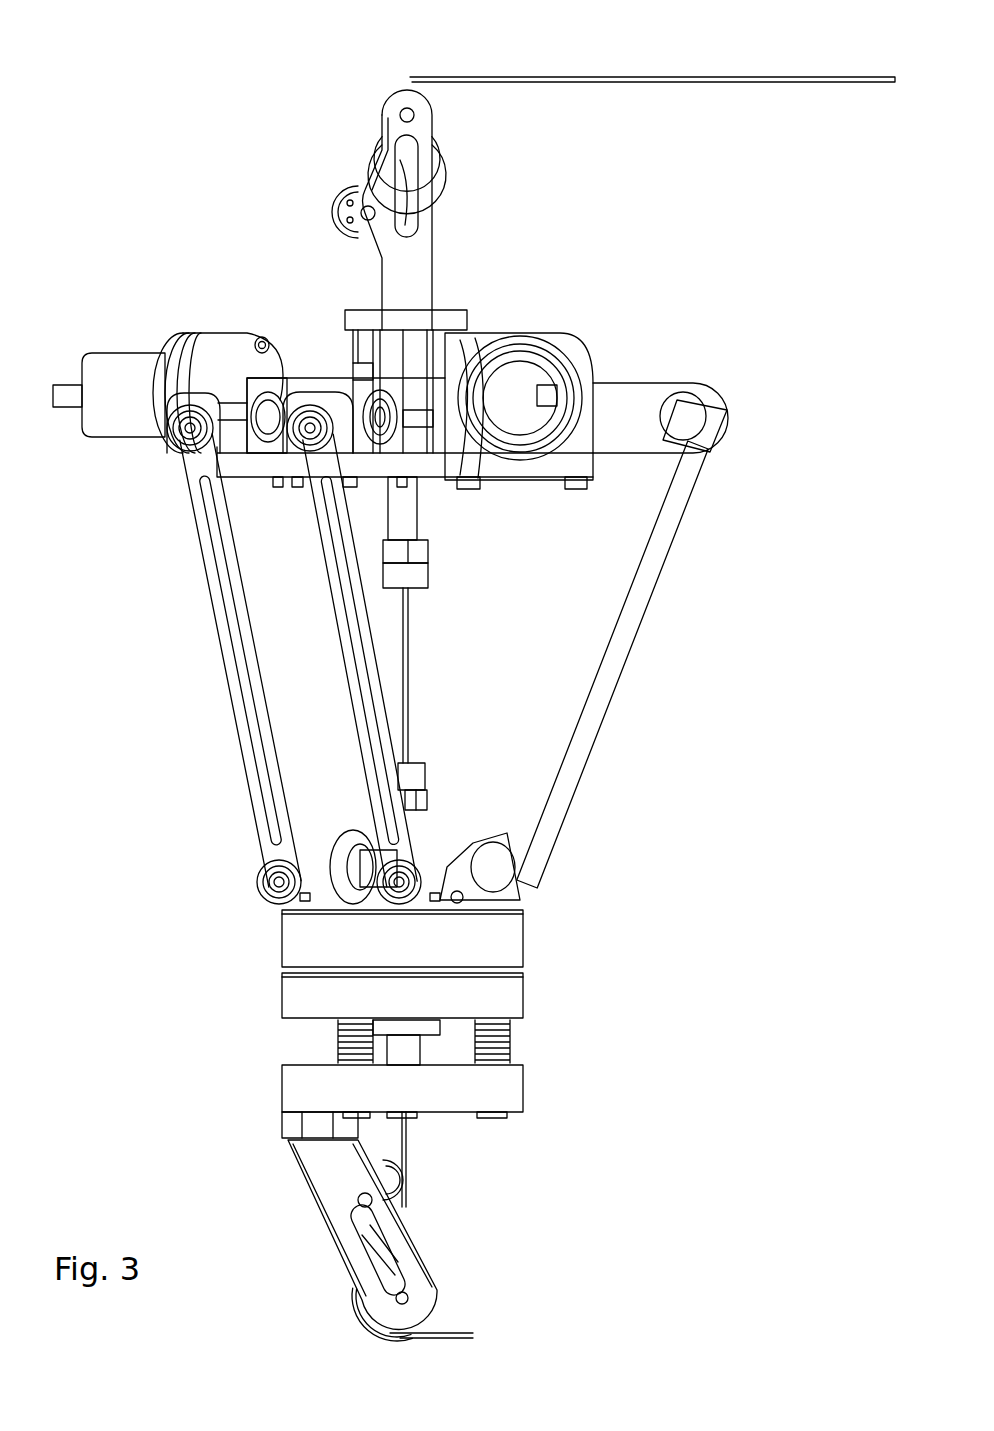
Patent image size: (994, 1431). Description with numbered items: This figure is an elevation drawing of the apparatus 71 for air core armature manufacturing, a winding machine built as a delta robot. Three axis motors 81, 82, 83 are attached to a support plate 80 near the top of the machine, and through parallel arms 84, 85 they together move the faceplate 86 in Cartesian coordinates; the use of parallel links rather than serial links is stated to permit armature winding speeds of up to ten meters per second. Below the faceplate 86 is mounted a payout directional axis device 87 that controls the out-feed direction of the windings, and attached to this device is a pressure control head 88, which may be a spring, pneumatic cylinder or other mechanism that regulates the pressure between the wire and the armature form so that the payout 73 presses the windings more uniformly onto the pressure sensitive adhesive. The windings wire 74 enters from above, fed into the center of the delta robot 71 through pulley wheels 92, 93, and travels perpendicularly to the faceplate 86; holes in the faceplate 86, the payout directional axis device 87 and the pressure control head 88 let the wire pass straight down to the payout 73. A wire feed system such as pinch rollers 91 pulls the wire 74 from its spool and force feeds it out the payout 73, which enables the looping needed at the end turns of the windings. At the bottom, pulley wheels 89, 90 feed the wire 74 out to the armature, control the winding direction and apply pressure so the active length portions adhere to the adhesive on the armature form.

The apparatus 71 is at (219, 94).
The windings wire 74 is at (661, 77).
The pulley wheel 92 is at (445, 108).
The pulley wheel 93 is at (332, 200).
The support plate 80 is at (442, 480).
The axis motor 81 is at (120, 353).
The axis motor 82 is at (548, 335).
The axis motor 83 is at (590, 355).
The parallel arm 84 is at (226, 648).
The parallel arm 85 is at (346, 650).
The pinch rollers 91 is at (428, 775).
The faceplate 86 is at (522, 942).
The payout directional axis device 87 is at (522, 997).
The pressure control head 88 is at (520, 1043).
The pulley wheel 89 is at (390, 1182).
The payout 73 is at (340, 1260).
The pulley wheel 90 is at (440, 1290).